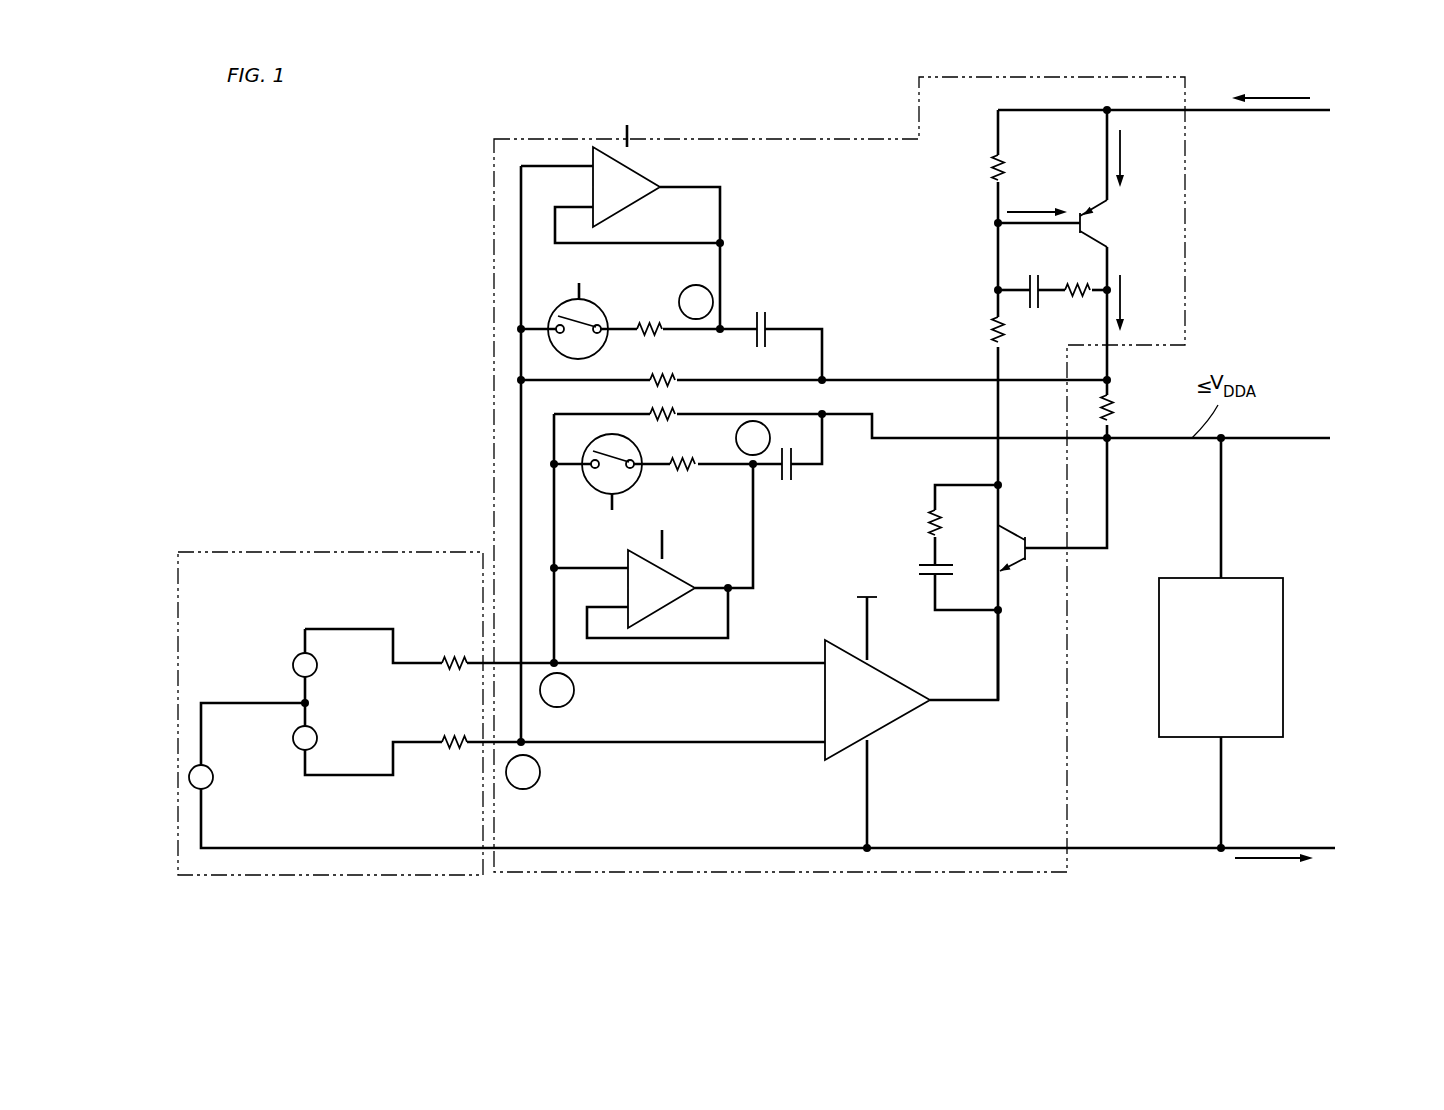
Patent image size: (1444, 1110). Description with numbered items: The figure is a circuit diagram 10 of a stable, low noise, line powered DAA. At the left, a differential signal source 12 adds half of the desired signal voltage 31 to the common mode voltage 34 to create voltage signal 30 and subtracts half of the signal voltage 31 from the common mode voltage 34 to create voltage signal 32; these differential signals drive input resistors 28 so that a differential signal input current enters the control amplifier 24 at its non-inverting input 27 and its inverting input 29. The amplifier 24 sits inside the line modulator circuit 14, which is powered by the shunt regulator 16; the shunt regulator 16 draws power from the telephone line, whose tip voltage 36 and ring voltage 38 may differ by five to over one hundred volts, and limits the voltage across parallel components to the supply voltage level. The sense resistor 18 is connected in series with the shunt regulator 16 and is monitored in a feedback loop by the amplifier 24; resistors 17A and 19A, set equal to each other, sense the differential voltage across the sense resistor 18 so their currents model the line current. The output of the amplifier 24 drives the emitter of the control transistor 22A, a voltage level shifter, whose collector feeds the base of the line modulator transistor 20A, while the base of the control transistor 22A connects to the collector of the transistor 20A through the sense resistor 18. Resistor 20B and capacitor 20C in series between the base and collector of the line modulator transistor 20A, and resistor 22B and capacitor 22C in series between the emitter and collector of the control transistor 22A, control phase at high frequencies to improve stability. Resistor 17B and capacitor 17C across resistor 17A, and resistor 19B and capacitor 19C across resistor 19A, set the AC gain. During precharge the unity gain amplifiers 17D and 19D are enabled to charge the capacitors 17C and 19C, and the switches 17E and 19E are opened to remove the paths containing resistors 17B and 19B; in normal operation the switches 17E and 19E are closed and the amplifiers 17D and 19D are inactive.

The circuit diagram 10 is at (452, 165).
The differential signal source 12 is at (232, 552).
The line modulator circuit 14 is at (810, 140).
The shunt regulator 16 is at (1283, 606).
The resistor 17A is at (680, 376).
The resistor 17B is at (665, 333).
The capacitor 17C is at (769, 316).
The amplifier 17D is at (648, 176).
The switch 17E is at (597, 301).
The sense resistor 18 is at (1112, 420).
The resistor 19A is at (680, 410).
The resistor 19B is at (695, 470).
The capacitor 19C is at (793, 472).
The amplifier 19D is at (677, 570).
The switch 19E is at (599, 435).
The line modulator transistor 20A is at (1103, 230).
The resistor 20B is at (1080, 287).
The capacitor 20C is at (1036, 275).
The control transistor 22A is at (1005, 525).
The resistor 22B is at (938, 533).
The capacitor 22C is at (932, 580).
The control amplifier 24 is at (900, 724).
The non-inverting input 27 is at (840, 756).
The input resistor 28 is at (440, 655).
The inverting input 29 is at (830, 652).
The voltage signal 30 is at (332, 805).
The signal voltage 31 is at (246, 645).
The voltage signal 32 is at (340, 612).
The common mode voltage 34 is at (210, 787).
The telephone line tip voltage 36 is at (1370, 122).
The telephone line ring voltage 38 is at (1380, 858).